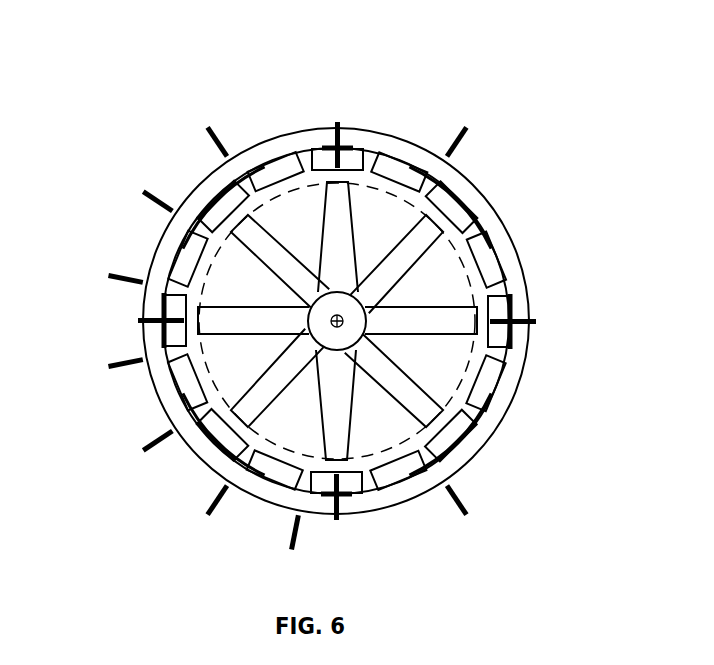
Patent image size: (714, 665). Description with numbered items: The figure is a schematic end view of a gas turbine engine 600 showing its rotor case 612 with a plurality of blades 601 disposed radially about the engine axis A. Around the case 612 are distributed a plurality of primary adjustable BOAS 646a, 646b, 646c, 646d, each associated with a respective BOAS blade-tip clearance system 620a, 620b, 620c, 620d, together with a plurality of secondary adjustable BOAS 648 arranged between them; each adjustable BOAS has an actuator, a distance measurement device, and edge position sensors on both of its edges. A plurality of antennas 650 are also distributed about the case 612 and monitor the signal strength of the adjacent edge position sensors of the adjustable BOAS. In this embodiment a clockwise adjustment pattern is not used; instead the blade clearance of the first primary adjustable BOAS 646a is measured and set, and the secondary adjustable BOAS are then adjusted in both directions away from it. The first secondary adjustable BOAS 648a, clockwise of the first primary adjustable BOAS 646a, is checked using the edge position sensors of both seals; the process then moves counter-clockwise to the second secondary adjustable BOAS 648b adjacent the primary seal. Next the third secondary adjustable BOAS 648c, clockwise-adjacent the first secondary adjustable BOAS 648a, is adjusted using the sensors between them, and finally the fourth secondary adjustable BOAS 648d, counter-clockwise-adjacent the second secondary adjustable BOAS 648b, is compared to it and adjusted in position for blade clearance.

The gas turbine engine 600 is at (103, 26).
The blades 601 is at (282, 258).
The rotor case 612 is at (505, 403).
The BOAS blade-tip clearance system 620a is at (360, 149).
The BOAS blade-tip clearance system 620b is at (540, 321).
The BOAS blade-tip clearance system 620c is at (320, 493).
The BOAS blade-tip clearance system 620d is at (136, 321).
The first primary adjustable BOAS 646a is at (333, 160).
The primary adjustable BOAS 646b is at (502, 303).
The primary adjustable BOAS 646c is at (357, 483).
The primary adjustable BOAS 646d is at (172, 310).
The secondary adjustable BOAS 648 is at (183, 382).
The first secondary adjustable BOAS 648a is at (408, 170).
The second secondary adjustable BOAS 648b is at (273, 160).
The third secondary adjustable BOAS 648c is at (458, 213).
The fourth secondary adjustable BOAS 648d is at (230, 188).
The antennas 650 is at (207, 132).
The engine axis A is at (340, 315).